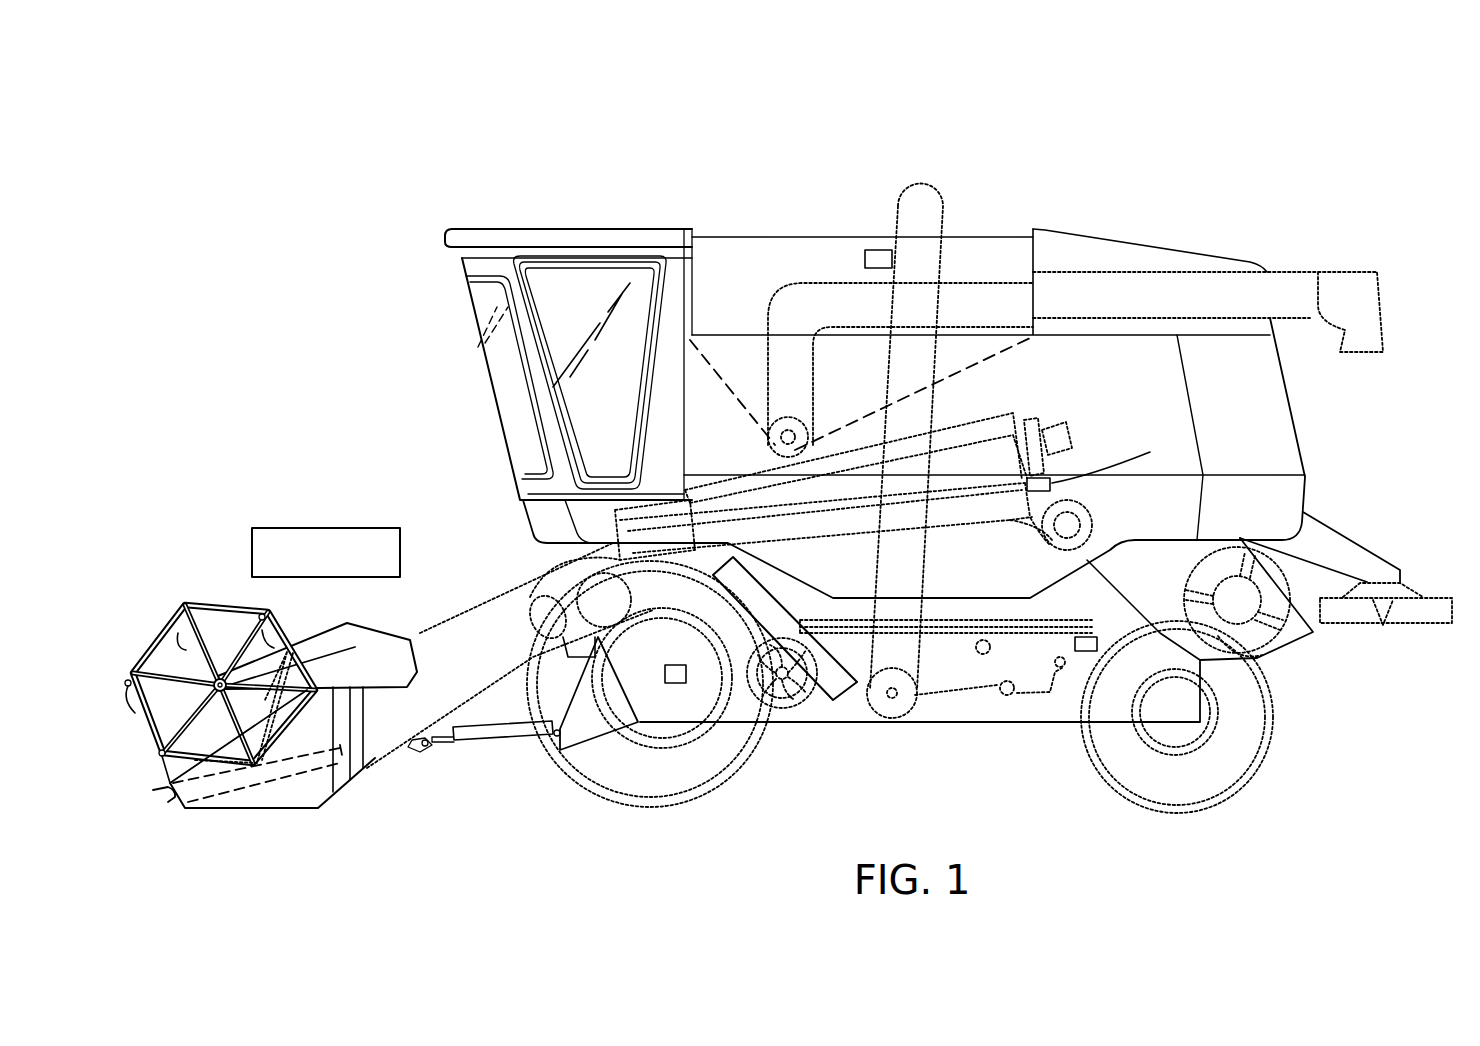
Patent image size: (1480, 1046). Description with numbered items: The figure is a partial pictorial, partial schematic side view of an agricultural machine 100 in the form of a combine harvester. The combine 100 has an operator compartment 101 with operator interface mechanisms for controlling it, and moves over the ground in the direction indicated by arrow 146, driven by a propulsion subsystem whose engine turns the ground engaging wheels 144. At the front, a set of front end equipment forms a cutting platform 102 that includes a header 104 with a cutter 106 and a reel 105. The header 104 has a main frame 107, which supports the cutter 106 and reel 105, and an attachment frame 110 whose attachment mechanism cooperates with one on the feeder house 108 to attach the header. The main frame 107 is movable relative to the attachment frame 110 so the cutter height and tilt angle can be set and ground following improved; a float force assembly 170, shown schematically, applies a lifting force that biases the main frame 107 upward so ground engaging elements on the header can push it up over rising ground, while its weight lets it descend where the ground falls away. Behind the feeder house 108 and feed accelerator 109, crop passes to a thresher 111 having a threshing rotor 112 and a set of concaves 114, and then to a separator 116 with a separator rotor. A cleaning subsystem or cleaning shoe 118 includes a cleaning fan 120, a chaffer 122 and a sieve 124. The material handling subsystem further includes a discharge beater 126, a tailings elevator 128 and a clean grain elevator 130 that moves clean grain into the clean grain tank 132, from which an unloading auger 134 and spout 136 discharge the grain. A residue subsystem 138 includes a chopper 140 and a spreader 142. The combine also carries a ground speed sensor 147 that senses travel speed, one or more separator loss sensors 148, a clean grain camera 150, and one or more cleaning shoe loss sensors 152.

The agricultural machine 100 is at (1298, 106).
The operator compartment 101 is at (572, 228).
The cutting platform 102 is at (190, 504).
The header 104 is at (240, 604).
The reel 105 is at (150, 642).
The cutter 106 is at (153, 788).
The main frame 107 is at (298, 810).
The feeder house 108 is at (458, 634).
The feed accelerator 109 is at (582, 585).
The attachment frame 110 is at (350, 790).
The thresher 111 is at (956, 422).
The threshing rotor 112 is at (1020, 410).
The concaves 114 is at (1119, 464).
The separator 116 is at (950, 543).
The cleaning subsystem 118 is at (1078, 670).
The cleaning fan 120 is at (771, 702).
The chaffer 122 is at (1085, 612).
The sieve 124 is at (1003, 636).
The discharge beater 126 is at (1090, 522).
The tailings elevator 128 is at (835, 702).
The clean grain elevator 130 is at (915, 690).
The clean grain tank 132 is at (713, 334).
The unloading auger 134 is at (805, 437).
The spout 136 is at (1340, 270).
The residue subsystem 138 is at (1388, 542).
The chopper 140 is at (1258, 660).
The spreader 142 is at (1347, 624).
The ground engaging wheels 144 is at (572, 773).
The arrow 146 is at (405, 443).
The ground speed sensor 147 is at (672, 683).
The separator loss sensors 148 is at (1030, 500).
The clean grain camera 150 is at (871, 248).
The cleaning shoe loss sensors 152 is at (1100, 647).
The float force assembly 170 is at (362, 642).